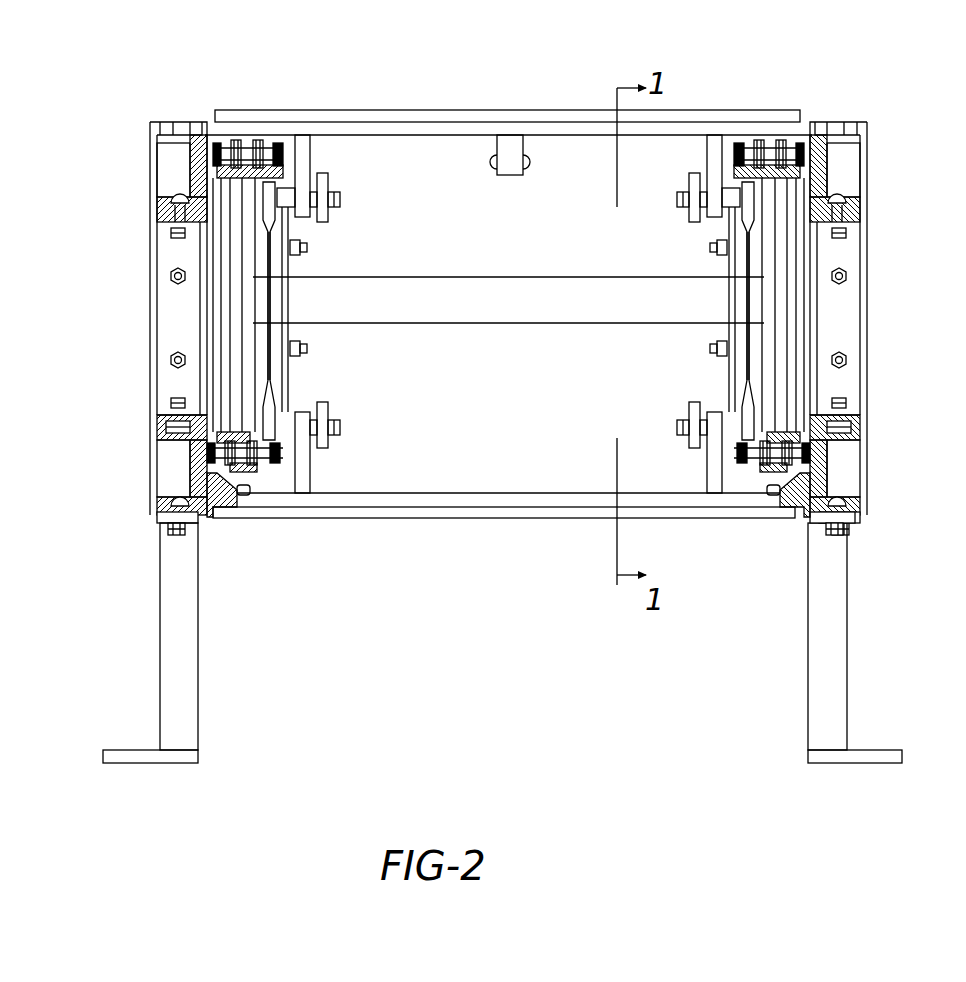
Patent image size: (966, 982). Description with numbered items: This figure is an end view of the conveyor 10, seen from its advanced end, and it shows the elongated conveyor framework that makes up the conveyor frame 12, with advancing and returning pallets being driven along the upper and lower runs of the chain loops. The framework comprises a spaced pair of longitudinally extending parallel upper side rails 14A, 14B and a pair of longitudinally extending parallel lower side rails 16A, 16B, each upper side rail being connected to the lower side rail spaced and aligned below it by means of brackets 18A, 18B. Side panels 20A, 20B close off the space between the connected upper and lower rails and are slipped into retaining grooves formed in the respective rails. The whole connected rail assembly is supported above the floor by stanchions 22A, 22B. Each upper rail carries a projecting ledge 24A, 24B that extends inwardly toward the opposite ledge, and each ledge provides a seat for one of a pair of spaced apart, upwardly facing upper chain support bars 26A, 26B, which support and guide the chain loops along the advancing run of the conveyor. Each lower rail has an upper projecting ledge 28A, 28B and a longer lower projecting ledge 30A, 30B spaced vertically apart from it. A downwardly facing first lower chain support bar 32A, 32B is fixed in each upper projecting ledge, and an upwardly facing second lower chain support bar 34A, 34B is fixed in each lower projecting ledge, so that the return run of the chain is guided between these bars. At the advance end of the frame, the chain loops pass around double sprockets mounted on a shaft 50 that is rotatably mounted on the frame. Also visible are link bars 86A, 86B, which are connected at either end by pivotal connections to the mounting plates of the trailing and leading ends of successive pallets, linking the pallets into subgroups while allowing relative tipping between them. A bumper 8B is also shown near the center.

The conveyor 10 is at (78, 372).
The conveyor frame 12 is at (120, 478).
The upper side rail 14A is at (152, 112).
The upper side rail 14B is at (840, 112).
The lower side rail 16A is at (147, 517).
The lower side rail 16B is at (855, 510).
The bracket 18A is at (162, 261).
The bracket 18B is at (848, 318).
The side panel 20A is at (148, 335).
The side panel 20B is at (868, 375).
The stanchion 22A is at (157, 678).
The stanchion 22B is at (851, 632).
The projecting ledge 24A is at (232, 178).
The projecting ledge 24B is at (763, 178).
The upper chain support bar 26A is at (274, 144).
The upper chain support bar 26B is at (783, 143).
The upper projecting ledge 28A is at (228, 442).
The upper projecting ledge 28B is at (787, 430).
The lower projecting ledge 30A is at (223, 480).
The lower projecting ledge 30B is at (790, 480).
The first lower chain support bar 32A is at (238, 433).
The first lower chain support bar 32B is at (780, 432).
The second lower chain support bar 34A is at (250, 465).
The second lower chain support bar 34B is at (770, 465).
The shaft 50 is at (540, 250).
The link bar 86A is at (338, 178).
The link bar 86B is at (685, 220).
The bracket 8B is at (497, 171).